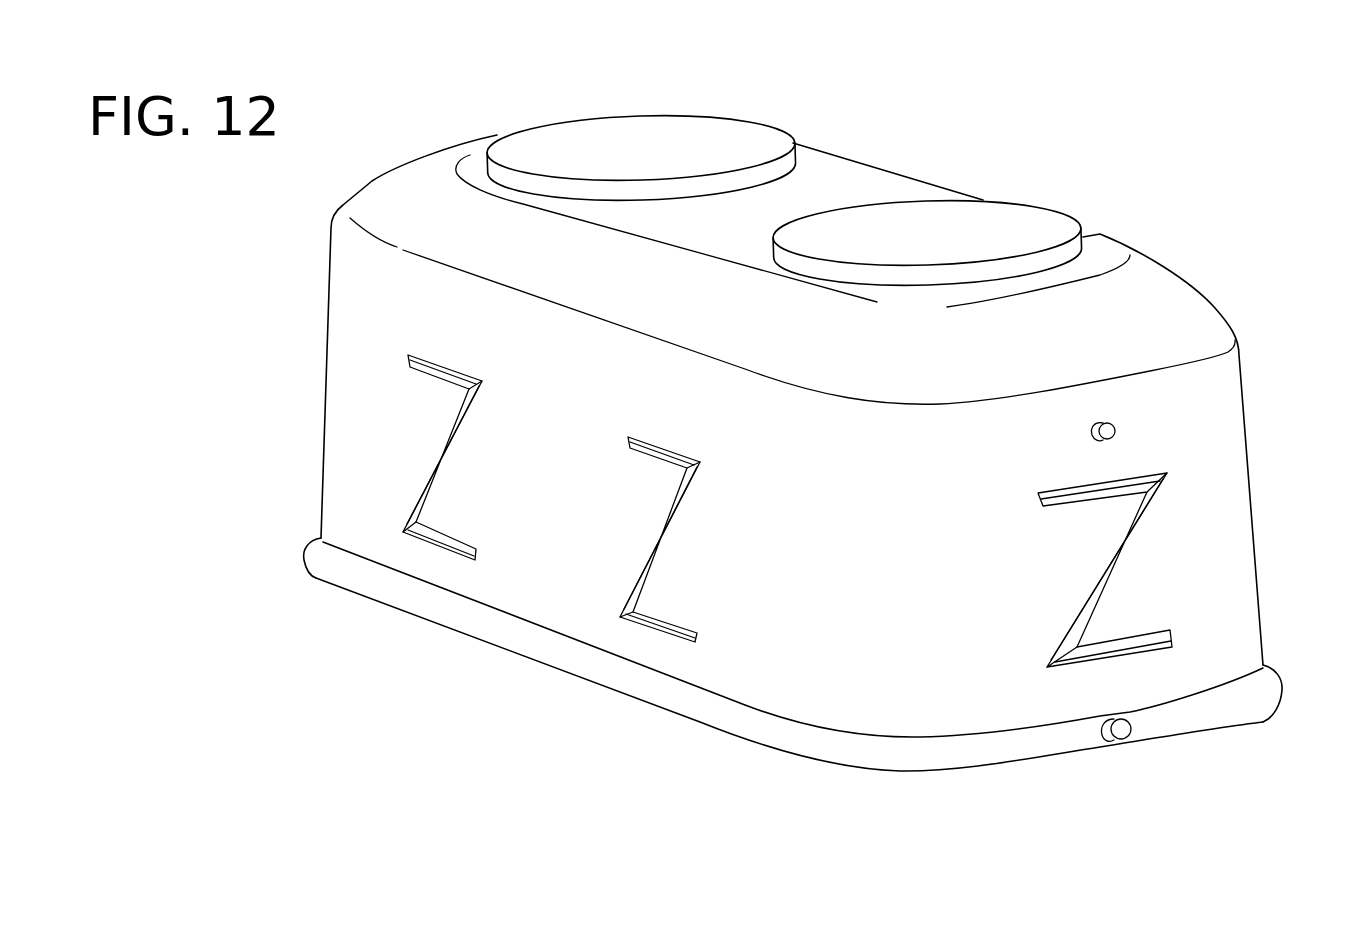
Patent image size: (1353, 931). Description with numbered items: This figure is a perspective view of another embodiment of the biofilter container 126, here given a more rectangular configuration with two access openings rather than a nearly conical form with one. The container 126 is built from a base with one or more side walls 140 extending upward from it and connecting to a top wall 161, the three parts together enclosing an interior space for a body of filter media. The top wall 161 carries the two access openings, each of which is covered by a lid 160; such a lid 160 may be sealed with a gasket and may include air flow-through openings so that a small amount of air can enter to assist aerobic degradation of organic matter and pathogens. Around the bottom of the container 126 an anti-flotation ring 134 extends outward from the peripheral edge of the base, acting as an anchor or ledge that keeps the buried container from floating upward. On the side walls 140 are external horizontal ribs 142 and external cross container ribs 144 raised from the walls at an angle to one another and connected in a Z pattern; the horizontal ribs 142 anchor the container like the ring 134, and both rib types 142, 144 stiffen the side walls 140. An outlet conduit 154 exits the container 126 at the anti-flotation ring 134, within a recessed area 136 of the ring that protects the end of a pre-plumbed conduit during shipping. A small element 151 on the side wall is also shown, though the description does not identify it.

The biofilter container 126 is at (263, 354).
The side walls 140 is at (333, 488).
The top wall 161 is at (1103, 252).
The lid 160 is at (707, 126).
The anti-flotation ring 134 is at (705, 708).
The recessed area 136 is at (1125, 715).
The outlet conduit 154 is at (1109, 746).
The side peg 151 is at (1093, 432).
The external horizontal ribs 142 is at (438, 377).
The external cross container ribs 144 is at (653, 537).